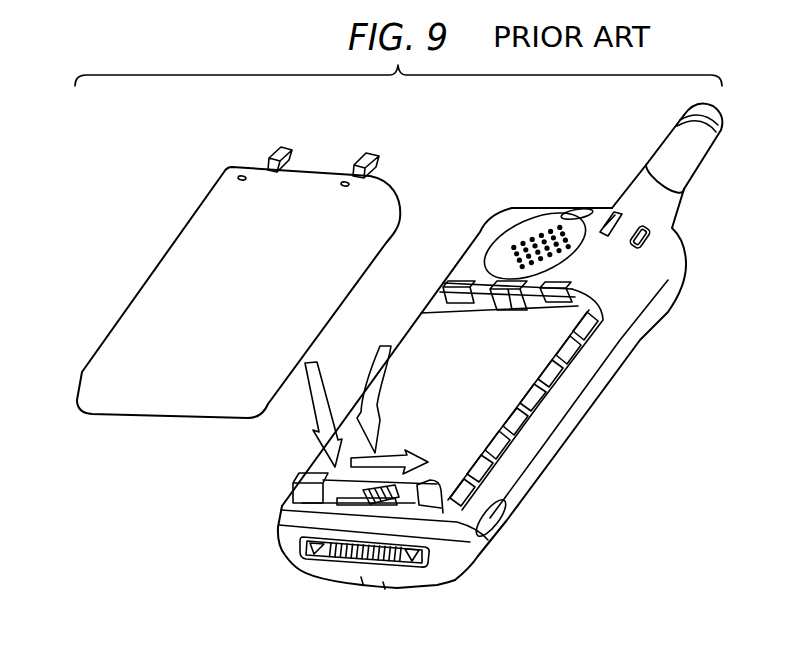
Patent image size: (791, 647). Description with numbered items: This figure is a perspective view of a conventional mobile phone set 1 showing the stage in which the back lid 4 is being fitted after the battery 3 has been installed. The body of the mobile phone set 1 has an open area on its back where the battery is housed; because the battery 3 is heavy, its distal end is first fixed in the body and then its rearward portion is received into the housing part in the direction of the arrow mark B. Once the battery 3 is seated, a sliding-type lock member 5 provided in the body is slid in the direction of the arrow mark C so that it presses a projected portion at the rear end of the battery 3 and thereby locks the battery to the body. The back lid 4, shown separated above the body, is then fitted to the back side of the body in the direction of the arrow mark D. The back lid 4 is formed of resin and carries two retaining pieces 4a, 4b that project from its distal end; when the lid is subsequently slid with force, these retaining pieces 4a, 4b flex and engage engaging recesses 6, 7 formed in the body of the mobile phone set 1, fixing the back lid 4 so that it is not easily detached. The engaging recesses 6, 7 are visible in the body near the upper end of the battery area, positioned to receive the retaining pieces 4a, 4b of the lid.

The mobile phone set 1 is at (528, 207).
The battery 3 is at (427, 337).
The back lid 4 is at (203, 230).
The retaining piece 4a is at (290, 150).
The retaining piece 4b is at (380, 158).
The lock member 5 is at (427, 527).
The engaging recess 6 is at (467, 288).
The engaging recess 7 is at (563, 285).
The arrow mark B is at (378, 360).
The arrow mark C is at (397, 458).
The arrow mark D is at (318, 412).